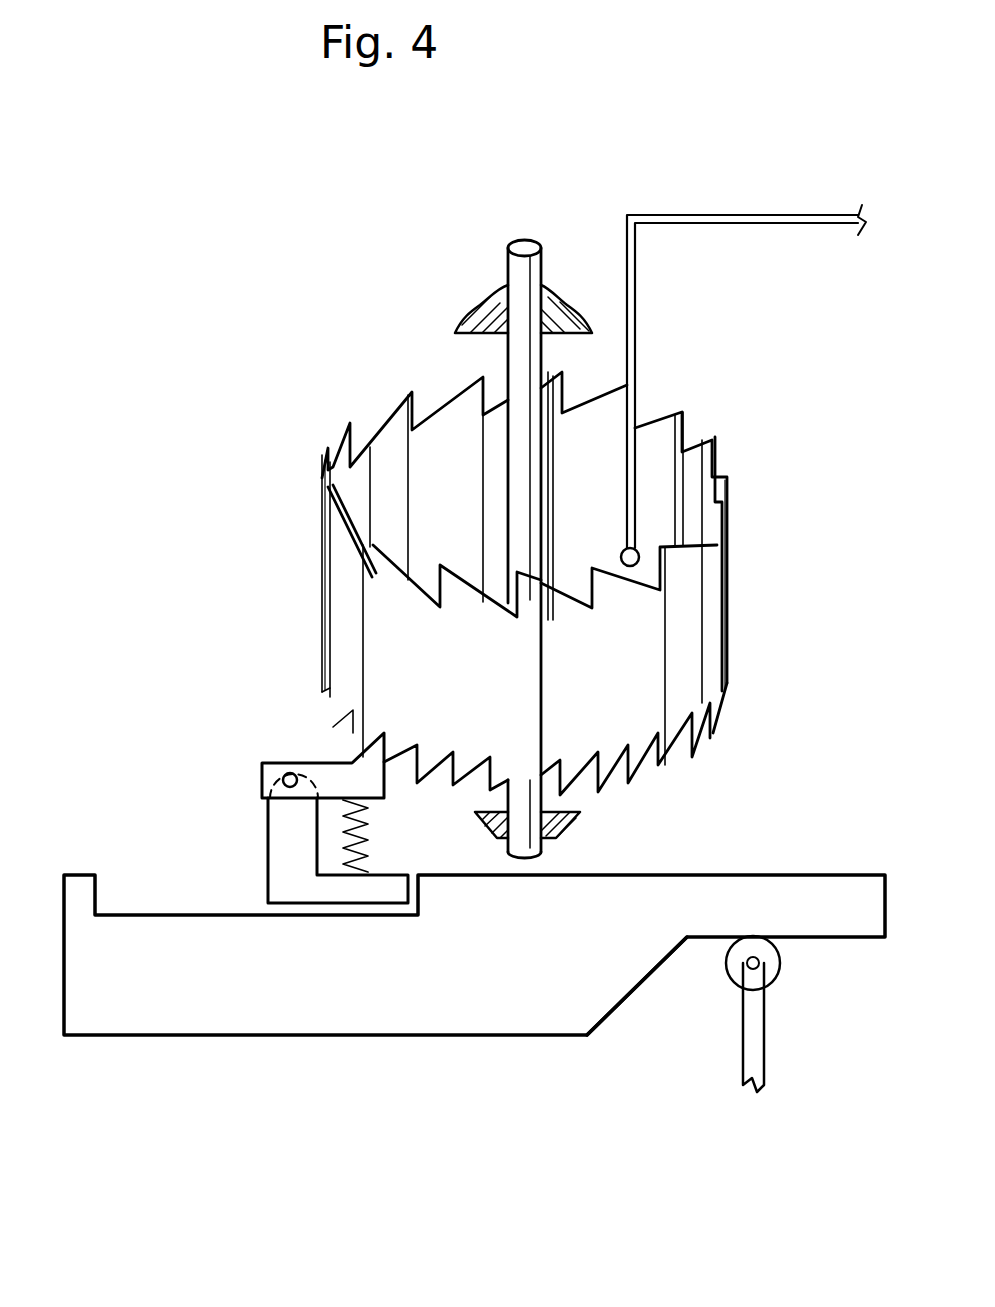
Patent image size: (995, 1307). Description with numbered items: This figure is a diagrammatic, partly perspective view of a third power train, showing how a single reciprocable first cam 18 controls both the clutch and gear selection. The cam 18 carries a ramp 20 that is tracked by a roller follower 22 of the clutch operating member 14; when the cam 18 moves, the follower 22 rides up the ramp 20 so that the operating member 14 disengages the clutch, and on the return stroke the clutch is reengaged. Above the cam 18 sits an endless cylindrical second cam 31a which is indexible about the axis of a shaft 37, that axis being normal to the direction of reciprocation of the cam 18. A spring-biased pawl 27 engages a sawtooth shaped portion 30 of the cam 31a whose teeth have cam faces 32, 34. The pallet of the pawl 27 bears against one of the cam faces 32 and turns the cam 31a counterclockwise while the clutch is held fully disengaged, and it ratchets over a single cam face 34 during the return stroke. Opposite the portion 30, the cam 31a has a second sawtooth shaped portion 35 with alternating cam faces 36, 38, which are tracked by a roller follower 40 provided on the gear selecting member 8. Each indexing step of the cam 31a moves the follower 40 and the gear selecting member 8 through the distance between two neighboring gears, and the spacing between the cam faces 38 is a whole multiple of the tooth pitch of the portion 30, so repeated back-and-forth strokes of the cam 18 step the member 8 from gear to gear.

The gear selecting member 8 is at (630, 268).
The operating member 14 is at (757, 1052).
The first cam 18 is at (300, 1038).
The ramp 20 is at (633, 992).
The roller follower 22 is at (775, 963).
The pawl 27 is at (330, 776).
The sawtooth shaped portion 30 is at (456, 792).
The second cam 31a is at (718, 623).
The cam faces 32 is at (618, 780).
The cam faces 34 is at (676, 745).
The second sawtooth shaped portion 35 is at (706, 418).
The cam faces 36 is at (463, 565).
The shaft 37 is at (521, 262).
The cam faces 38 is at (372, 548).
The roller follower 40 is at (623, 549).